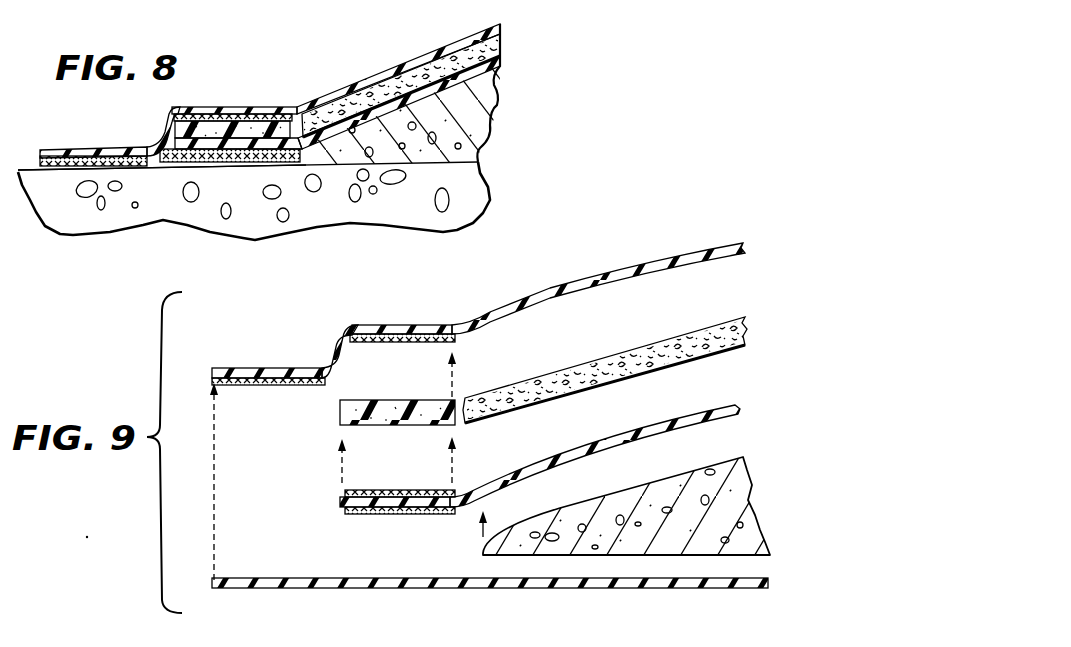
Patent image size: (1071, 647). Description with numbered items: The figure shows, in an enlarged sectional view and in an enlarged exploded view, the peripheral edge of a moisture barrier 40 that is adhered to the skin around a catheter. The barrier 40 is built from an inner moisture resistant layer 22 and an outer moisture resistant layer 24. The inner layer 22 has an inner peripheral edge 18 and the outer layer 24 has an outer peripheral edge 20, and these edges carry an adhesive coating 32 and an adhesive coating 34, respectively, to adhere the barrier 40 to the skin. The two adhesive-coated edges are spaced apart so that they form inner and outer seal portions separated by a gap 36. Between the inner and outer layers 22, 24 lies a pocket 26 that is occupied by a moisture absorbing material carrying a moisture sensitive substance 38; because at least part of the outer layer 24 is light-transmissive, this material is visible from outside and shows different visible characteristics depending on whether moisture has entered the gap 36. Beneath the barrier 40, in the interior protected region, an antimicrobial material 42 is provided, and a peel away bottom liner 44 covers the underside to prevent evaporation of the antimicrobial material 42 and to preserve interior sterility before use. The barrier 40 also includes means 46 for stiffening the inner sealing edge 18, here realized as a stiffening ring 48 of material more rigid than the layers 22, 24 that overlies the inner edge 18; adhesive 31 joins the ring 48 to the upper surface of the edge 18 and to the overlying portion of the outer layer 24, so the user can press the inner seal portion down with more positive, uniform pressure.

In FIG. 8, the inner peripheral edge 18 is at (245, 121).
In FIG. 9, the inner peripheral edge 18 is at (391, 497).
In FIG. 8, the outer peripheral edge 20 is at (90, 147).
In FIG. 9, the outer peripheral edge 20 is at (268, 368).
In FIG. 8, the inner moisture resistant layer 22 is at (497, 77).
In FIG. 9, the inner moisture resistant layer 22 is at (732, 407).
In FIG. 8, the outer moisture resistant layer 24 is at (497, 28).
In FIG. 9, the outer moisture resistant layer 24 is at (746, 240).
In FIG. 8, the pocket 26 is at (498, 56).
In FIG. 9, the pocket 26 is at (724, 305).
In FIG. 8, the adhesive 31 is at (274, 118).
In FIG. 9, the adhesive 31 is at (430, 326).
In FIG. 8, the adhesive coating 32 is at (207, 168).
In FIG. 9, the adhesive coating 32 is at (420, 512).
In FIG. 8, the adhesive coating 34 is at (101, 172).
In FIG. 9, the adhesive coating 34 is at (277, 385).
In FIG. 8, the gap 36 is at (160, 157).
In FIG. 9, the gap 36 is at (334, 392).
In FIG. 8, the moisture sensitive substance 38 is at (447, 66).
In FIG. 9, the moisture sensitive substance 38 is at (594, 362).
In FIG. 8, the moisture barrier 40 is at (432, 74).
In FIG. 9, the moisture barrier 40 is at (626, 313).
In FIG. 8, the antimicrobial material 42 is at (497, 122).
In FIG. 9, the antimicrobial material 42 is at (638, 535).
In FIG. 9, the peel away bottom liner 44 is at (738, 590).
In FIG. 8, the means for stiffening 46 is at (216, 124).
In FIG. 9, the means for stiffening 46 is at (389, 388).
In FIG. 8, the stiffening ring 48 is at (168, 122).
In FIG. 9, the stiffening ring 48 is at (352, 330).